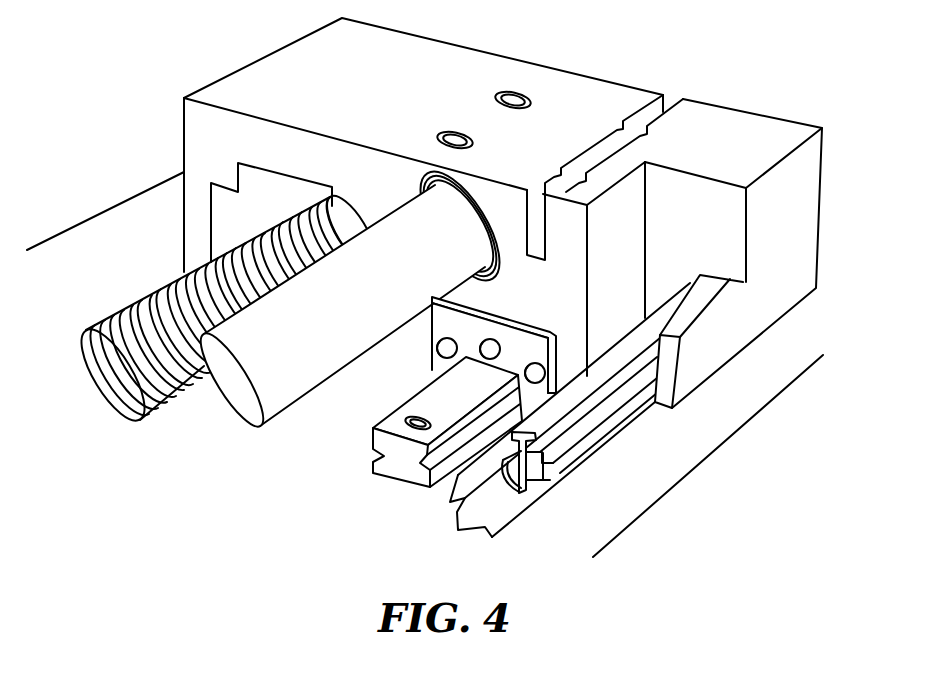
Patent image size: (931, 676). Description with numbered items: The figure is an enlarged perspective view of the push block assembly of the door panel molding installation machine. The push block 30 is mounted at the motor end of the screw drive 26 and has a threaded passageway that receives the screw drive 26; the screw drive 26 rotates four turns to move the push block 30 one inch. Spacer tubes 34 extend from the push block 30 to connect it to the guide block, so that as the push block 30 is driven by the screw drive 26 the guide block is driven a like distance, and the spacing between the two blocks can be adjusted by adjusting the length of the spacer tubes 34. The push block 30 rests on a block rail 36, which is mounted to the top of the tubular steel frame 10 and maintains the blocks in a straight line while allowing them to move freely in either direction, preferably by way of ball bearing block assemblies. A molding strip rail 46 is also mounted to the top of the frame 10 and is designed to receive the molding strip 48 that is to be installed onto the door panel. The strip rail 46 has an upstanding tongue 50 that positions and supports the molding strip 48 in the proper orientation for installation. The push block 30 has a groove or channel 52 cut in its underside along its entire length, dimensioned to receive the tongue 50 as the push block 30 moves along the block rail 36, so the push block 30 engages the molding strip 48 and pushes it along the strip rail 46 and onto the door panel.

The tubular steel frame 10 is at (613, 508).
The screw drive 26 is at (172, 283).
The push block 30 is at (600, 63).
The spacer tubes 34 is at (278, 412).
The block rail 36 is at (407, 477).
The molding strip rail 46 is at (485, 515).
The molding strip 48 is at (558, 407).
The upstanding tongue 50 is at (485, 485).
The groove or channel 52 is at (725, 267).